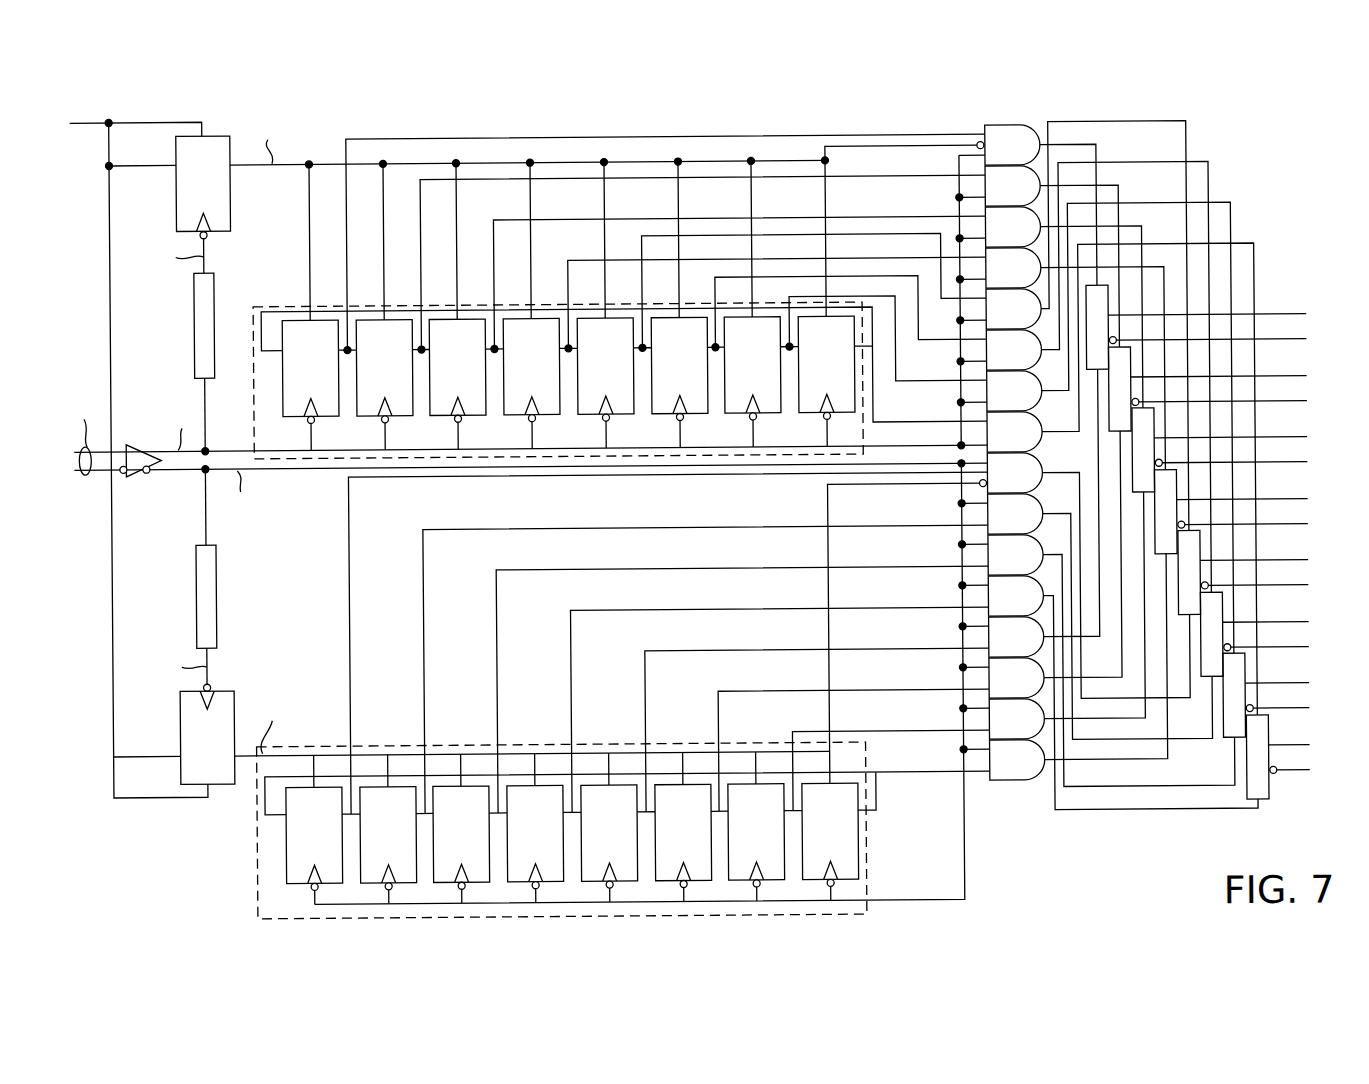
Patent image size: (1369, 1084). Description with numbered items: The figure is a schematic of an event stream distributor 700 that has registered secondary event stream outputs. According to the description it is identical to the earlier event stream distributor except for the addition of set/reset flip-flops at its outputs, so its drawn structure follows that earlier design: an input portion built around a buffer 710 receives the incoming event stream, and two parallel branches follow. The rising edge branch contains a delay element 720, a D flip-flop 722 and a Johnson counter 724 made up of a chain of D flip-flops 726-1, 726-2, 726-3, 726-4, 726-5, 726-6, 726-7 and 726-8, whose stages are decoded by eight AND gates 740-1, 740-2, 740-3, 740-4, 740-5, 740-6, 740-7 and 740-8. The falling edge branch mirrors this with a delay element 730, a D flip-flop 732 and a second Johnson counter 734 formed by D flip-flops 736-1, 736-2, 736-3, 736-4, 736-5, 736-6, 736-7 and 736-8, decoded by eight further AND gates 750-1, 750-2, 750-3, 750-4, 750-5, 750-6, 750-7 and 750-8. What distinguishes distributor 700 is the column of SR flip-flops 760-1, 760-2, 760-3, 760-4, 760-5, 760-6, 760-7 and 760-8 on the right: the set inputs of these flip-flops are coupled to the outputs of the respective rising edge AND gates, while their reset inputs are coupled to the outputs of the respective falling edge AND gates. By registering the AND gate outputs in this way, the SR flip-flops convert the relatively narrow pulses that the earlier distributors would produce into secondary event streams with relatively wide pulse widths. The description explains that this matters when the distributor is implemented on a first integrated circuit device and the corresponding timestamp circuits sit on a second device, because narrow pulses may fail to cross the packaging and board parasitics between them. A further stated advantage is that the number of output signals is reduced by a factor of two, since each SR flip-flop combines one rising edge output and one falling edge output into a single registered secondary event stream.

The event stream distributor 700 is at (738, 122).
The differential buffer 710 is at (135, 447).
The delay element 720 is at (214, 286).
The flip-flop 722 is at (226, 136).
The shift register 724 is at (290, 462).
The flip-flop 726-1 is at (310, 371).
The flip-flop 726-2 is at (384, 371).
The flip-flop 726-3 is at (457, 370).
The flip-flop 726-4 is at (531, 369).
The flip-flop 726-5 is at (605, 369).
The flip-flop 726-6 is at (679, 368).
The flip-flop 726-7 is at (752, 368).
The flip-flop 726-8 is at (826, 367).
The delay element 730 is at (214, 556).
The flip-flop 732 is at (233, 690).
The shift register 734 is at (252, 912).
The flip-flop 736-1 is at (314, 838).
The flip-flop 736-2 is at (388, 838).
The flip-flop 736-3 is at (461, 837).
The flip-flop 736-4 is at (535, 836).
The flip-flop 736-5 is at (609, 836).
The flip-flop 736-6 is at (683, 835).
The flip-flop 736-7 is at (756, 835).
The flip-flop 736-8 is at (830, 834).
The AND gate 740-1 is at (1012, 145).
The AND gate 740-2 is at (1012, 186).
The AND gate 740-3 is at (1012, 227).
The AND gate 740-4 is at (1013, 268).
The AND gate 740-5 is at (1013, 309).
The AND gate 740-6 is at (1013, 350).
The AND gate 740-7 is at (1014, 391).
The AND gate 740-8 is at (1014, 432).
The AND gate 750-1 is at (1014, 473).
The AND gate 750-2 is at (1015, 514).
The AND gate 750-3 is at (1015, 555).
The AND gate 750-4 is at (1015, 596).
The AND gate 750-5 is at (1016, 637).
The AND gate 750-6 is at (1016, 678).
The AND gate 750-7 is at (1016, 719).
The AND gate 750-8 is at (1017, 760).
The SR flip-flop 760-1 is at (1098, 294).
The SR flip-flop 760-2 is at (1120, 356).
The SR flip-flop 760-3 is at (1142, 417).
The SR flip-flop 760-4 is at (1165, 479).
The SR flip-flop 760-5 is at (1184, 632).
The SR flip-flop 760-6 is at (1204, 690).
The SR flip-flop 760-7 is at (1230, 750).
The SR flip-flop 760-8 is at (1259, 812).